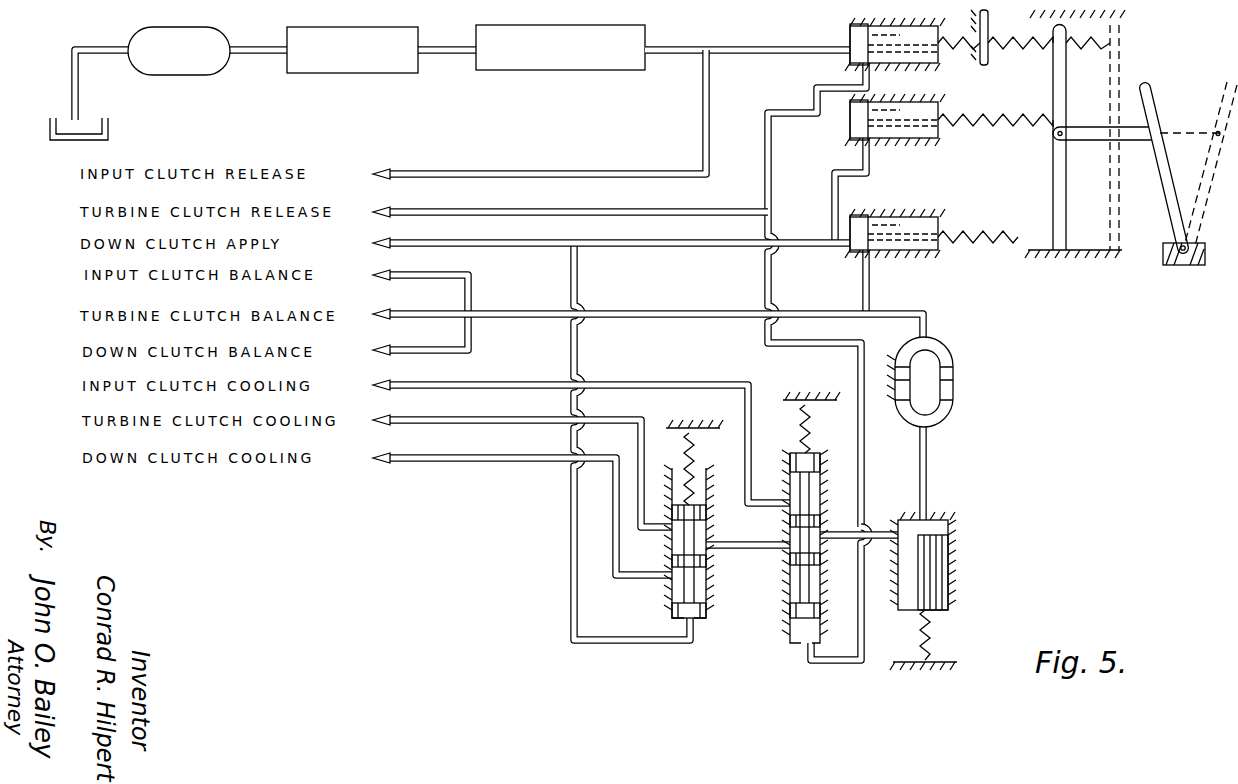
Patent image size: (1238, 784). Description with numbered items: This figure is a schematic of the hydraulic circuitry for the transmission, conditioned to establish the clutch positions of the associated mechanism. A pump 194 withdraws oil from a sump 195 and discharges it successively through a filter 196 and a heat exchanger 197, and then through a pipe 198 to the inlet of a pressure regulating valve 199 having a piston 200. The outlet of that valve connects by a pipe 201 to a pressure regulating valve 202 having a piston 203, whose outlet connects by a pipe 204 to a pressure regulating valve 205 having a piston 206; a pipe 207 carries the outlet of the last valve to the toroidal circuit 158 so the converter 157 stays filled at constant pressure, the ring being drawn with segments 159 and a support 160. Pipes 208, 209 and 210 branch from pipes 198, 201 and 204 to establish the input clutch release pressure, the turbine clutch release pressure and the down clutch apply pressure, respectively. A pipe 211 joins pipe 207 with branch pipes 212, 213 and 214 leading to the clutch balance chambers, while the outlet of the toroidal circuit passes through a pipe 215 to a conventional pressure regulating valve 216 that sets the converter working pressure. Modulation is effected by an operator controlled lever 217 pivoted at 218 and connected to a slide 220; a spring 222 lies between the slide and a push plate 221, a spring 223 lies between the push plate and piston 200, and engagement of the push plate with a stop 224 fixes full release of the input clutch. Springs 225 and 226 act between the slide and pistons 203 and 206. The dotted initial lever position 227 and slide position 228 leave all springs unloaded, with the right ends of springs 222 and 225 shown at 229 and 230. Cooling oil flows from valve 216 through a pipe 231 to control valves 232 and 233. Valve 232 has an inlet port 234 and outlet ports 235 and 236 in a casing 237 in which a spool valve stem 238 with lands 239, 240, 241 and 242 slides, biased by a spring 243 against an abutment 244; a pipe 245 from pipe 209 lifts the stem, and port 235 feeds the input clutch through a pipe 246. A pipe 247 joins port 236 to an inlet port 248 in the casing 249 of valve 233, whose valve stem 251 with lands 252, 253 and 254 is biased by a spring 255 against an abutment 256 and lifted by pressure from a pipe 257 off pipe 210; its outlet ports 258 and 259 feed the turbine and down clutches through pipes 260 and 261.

The converter 157 is at (951, 342).
The toroidal circuit 158 is at (955, 352).
The ring segments 159 is at (946, 380).
The ring support 160 is at (893, 405).
The pump 194 is at (208, 76).
The sump 195 is at (108, 131).
The filter 196 is at (338, 74).
The heat exchanger 197 is at (543, 71).
The pipe 198 is at (727, 47).
The pressure regulating valve 199 is at (903, 24).
The piston 200 is at (895, 44).
The pipe 201 is at (836, 90).
The pressure regulating valve 202 is at (903, 100).
The piston 203 is at (895, 120).
The pipe 204 is at (872, 169).
The pressure regulating valve 205 is at (889, 213).
The piston 206 is at (895, 233).
The pipe 207 is at (872, 277).
The pipe 208 is at (703, 104).
The pipe 209 is at (731, 209).
The pipe 210 is at (731, 250).
The pipe 211 is at (698, 311).
The branch pipe 212 is at (411, 277).
The branch pipe 213 is at (421, 309).
The branch pipe 214 is at (404, 353).
The pipe 215 is at (928, 454).
The pressure regulating valve 216 is at (950, 552).
The operator controlled lever 217 is at (1159, 222).
The pivot 218 is at (1182, 266).
The slide 220 is at (1053, 200).
The push plate 221 is at (988, 40).
The spring 222 is at (1025, 56).
The spring 223 is at (962, 50).
The stop 224 is at (978, 13).
The spring 225 is at (1003, 131).
The spring 226 is at (980, 229).
The initial position of lever 227 is at (1216, 110).
The initial position of slide 228 is at (1106, 60).
The right end position of spring 222 229 is at (1102, 42).
The right end position of spring 225 230 is at (1085, 127).
The pipe 231 is at (876, 522).
The control valve 232 is at (788, 654).
The control valve 233 is at (699, 636).
The inlet port 234 is at (823, 532).
The outlet port 235 is at (788, 499).
The outlet port 236 is at (787, 551).
The casing 237 is at (796, 645).
The spool valve stem 238 is at (790, 588).
The land 239 is at (810, 455).
The land 240 is at (788, 520).
The land 241 is at (822, 554).
The land 242 is at (788, 605).
The spring 243 is at (800, 425).
The abutment 244 is at (791, 398).
The pipe 245 is at (852, 667).
The pipe 246 is at (685, 382).
The pipe 247 is at (732, 554).
The inlet port 248 is at (735, 542).
The casing 249 is at (679, 620).
The spool type valve stem 251 is at (681, 598).
The land 252 is at (713, 516).
The land 253 is at (672, 561).
The land 254 is at (676, 613).
The spring 255 is at (698, 457).
The abutment 256 is at (681, 428).
The pipe 257 is at (570, 582).
The outlet port 258 is at (668, 525).
The outlet port 259 is at (668, 581).
The pipe 260 is at (636, 420).
The pipe 261 is at (630, 456).